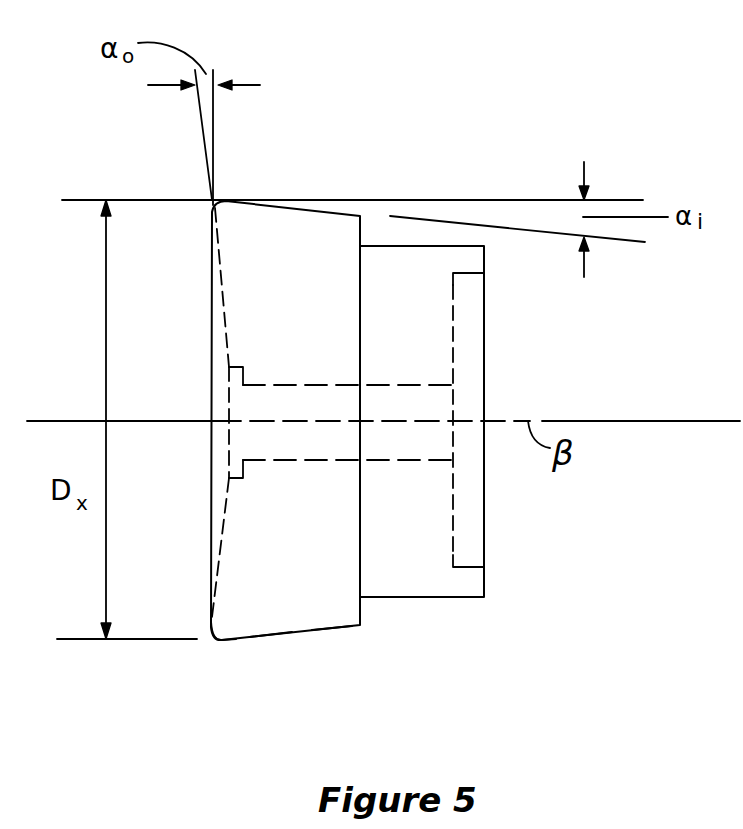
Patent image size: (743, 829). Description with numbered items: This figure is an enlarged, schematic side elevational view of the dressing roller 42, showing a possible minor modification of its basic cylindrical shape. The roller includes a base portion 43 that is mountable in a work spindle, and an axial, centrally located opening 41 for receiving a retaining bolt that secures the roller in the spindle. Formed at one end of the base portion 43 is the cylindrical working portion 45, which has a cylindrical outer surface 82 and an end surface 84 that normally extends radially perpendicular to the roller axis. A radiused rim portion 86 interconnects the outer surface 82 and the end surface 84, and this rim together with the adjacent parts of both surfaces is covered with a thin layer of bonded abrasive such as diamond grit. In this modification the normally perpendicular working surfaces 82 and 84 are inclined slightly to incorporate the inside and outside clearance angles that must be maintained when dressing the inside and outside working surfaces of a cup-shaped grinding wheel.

The dressing roller 42 is at (352, 177).
The end surface 84 is at (246, 412).
The base portion 43 is at (430, 578).
The opening 41 is at (413, 460).
The working portion 45 is at (271, 613).
The cylindrical outer surface 82 is at (332, 630).
The radiused rim portion 86 is at (220, 641).